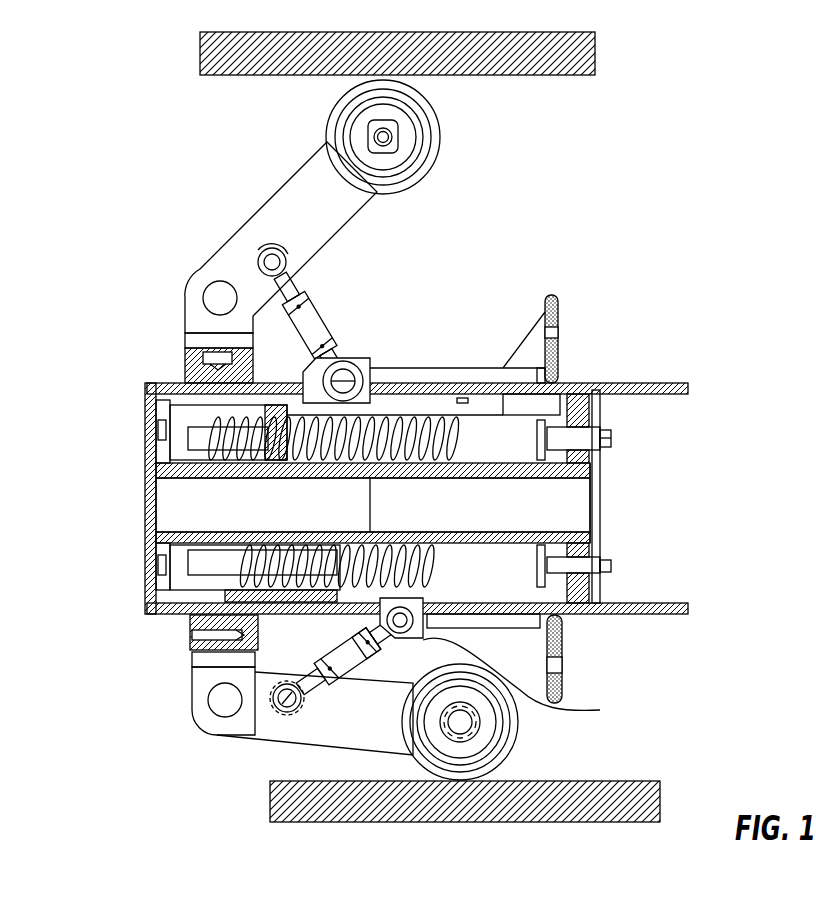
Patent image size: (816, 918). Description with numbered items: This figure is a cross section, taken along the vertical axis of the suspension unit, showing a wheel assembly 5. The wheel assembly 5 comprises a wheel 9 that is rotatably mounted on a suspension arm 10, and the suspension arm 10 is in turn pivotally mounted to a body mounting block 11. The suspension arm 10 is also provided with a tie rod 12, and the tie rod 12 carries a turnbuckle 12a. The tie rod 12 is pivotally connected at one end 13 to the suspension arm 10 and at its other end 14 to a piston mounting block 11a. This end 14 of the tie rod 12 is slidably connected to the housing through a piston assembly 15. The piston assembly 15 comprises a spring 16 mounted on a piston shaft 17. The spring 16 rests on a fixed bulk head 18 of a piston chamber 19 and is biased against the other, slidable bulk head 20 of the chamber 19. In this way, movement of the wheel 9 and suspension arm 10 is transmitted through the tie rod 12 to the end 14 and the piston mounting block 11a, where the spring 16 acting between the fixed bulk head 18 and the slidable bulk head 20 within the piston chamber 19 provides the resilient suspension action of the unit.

The wheel assembly 5 is at (627, 720).
The wheel 9 is at (441, 140).
The suspension arm 10 is at (283, 213).
The body mounting block 11 is at (227, 683).
The piston mounting block 11a is at (562, 710).
The tie rod 12 is at (320, 322).
The turnbuckle 12a is at (350, 657).
The end of tie rod 13 is at (258, 262).
The end of tie rod 14 is at (355, 366).
The piston assembly 15 is at (560, 623).
The spring 16 is at (217, 430).
The piston shaft 17 is at (597, 438).
The fixed bulk head 18 is at (597, 550).
The piston chamber 19 is at (497, 457).
The slidable bulk head 20 is at (217, 466).